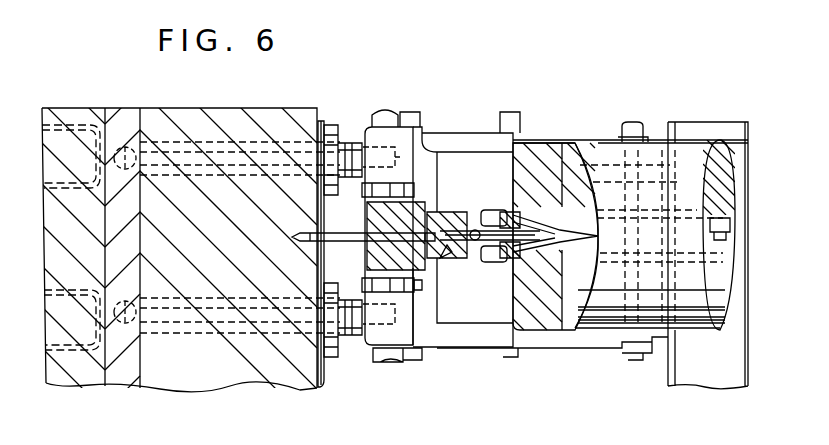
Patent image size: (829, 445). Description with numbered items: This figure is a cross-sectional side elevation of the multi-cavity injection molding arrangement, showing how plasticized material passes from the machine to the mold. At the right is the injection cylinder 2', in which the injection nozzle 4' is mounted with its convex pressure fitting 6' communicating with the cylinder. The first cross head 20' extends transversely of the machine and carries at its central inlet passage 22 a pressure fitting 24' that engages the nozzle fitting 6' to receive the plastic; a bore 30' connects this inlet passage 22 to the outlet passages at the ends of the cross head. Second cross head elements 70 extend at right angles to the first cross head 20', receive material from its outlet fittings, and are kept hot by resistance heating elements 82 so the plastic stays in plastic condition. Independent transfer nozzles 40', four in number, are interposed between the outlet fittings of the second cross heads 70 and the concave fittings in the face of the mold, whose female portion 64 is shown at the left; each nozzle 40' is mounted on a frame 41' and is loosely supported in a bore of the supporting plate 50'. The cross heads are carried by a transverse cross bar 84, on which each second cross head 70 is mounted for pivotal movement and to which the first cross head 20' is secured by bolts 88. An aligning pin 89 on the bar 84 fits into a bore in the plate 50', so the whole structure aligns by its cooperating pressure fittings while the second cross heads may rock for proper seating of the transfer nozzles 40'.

The female portion of the mold 64 is at (67, 108).
The supporting plate 50' is at (193, 215).
The frame 41' is at (321, 277).
The transfer nozzles 40' is at (362, 237).
The second cross head elements 70 is at (365, 135).
The resistance heating elements 82 is at (413, 183).
The bolts 88 is at (367, 245).
The aligning pin 89 is at (330, 235).
The cross head 20' is at (483, 217).
The injection nozzle 4' is at (494, 219).
The bore 30' is at (443, 266).
The pressure fitting 24' is at (480, 258).
The transverse cross bar 84 is at (414, 285).
The bushing 22 is at (460, 262).
The convex pressure fitting 6' is at (541, 264).
The injection cylinder 2' is at (630, 241).